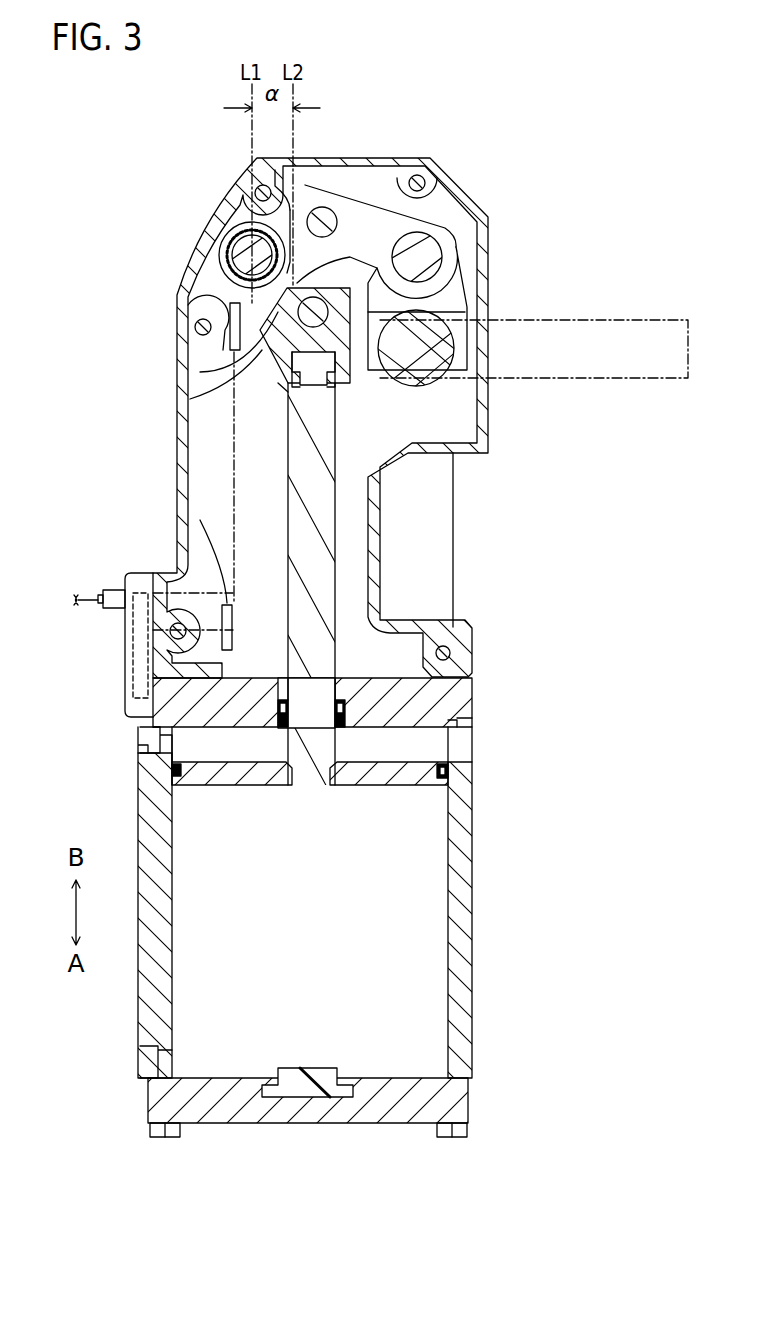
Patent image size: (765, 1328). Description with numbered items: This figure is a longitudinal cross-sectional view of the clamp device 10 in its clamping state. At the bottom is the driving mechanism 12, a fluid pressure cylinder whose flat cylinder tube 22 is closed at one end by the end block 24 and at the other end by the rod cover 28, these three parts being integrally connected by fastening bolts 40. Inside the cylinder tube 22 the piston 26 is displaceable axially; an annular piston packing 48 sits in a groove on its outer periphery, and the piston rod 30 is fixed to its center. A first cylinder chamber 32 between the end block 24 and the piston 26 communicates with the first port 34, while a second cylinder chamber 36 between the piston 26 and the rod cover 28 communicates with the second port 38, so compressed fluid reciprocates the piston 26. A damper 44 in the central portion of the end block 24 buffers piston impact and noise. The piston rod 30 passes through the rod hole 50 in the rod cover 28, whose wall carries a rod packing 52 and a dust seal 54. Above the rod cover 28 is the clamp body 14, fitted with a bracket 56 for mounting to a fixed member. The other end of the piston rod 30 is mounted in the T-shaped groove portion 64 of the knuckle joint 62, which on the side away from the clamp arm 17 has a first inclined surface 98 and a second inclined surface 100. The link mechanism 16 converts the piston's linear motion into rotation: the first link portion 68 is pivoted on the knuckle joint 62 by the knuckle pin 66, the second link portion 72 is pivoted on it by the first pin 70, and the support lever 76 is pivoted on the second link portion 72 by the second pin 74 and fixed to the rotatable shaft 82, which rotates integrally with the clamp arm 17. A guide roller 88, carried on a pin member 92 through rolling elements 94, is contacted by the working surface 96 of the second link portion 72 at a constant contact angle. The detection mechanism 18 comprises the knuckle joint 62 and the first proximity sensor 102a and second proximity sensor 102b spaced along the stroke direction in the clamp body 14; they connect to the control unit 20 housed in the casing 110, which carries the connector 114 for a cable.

The clamp device 10 is at (101, 176).
The driving mechanism 12 is at (494, 822).
The clamp body 14 is at (503, 216).
The link mechanism 16 is at (367, 176).
The clamp arm 17 is at (603, 320).
The detection mechanism 18 is at (104, 467).
The control unit 20 is at (133, 660).
The cylinder tube 22 is at (460, 1030).
The end block 24 is at (455, 1105).
The piston 26 is at (257, 786).
The rod cover 28 is at (455, 703).
The piston rod 30 is at (330, 588).
The first cylinder chamber 32 is at (430, 968).
The first port 34 is at (145, 1062).
The second cylinder chamber 36 is at (455, 746).
The second port 38 is at (150, 743).
The fastening bolts 40 is at (456, 1138).
The damper 44 is at (306, 1090).
The piston packing 48 is at (452, 774).
The rod hole 50 is at (320, 682).
The rod packing 52 is at (338, 722).
The dust seal 54 is at (278, 707).
The bracket 56 is at (432, 540).
The knuckle joint 62 is at (190, 399).
The groove portion 64 is at (330, 375).
The knuckle pin 66 is at (318, 300).
The first link portion 68 is at (253, 205).
The first pin 70 is at (325, 215).
The second link portion 72 is at (380, 205).
The second pin 74 is at (416, 255).
The support lever 76 is at (450, 290).
The rotatable shaft 82 is at (425, 352).
The guide roller 88 is at (226, 283).
The pin member 92 is at (248, 258).
The rolling elements 94 is at (230, 236).
The working surface 96 is at (304, 185).
The first inclined surface 98 is at (195, 325).
The second inclined surface 100 is at (280, 387).
The first proximity sensor 102a is at (200, 372).
The second proximity sensor 102b is at (200, 520).
The casing 110 is at (137, 574).
The connector 114 is at (117, 593).